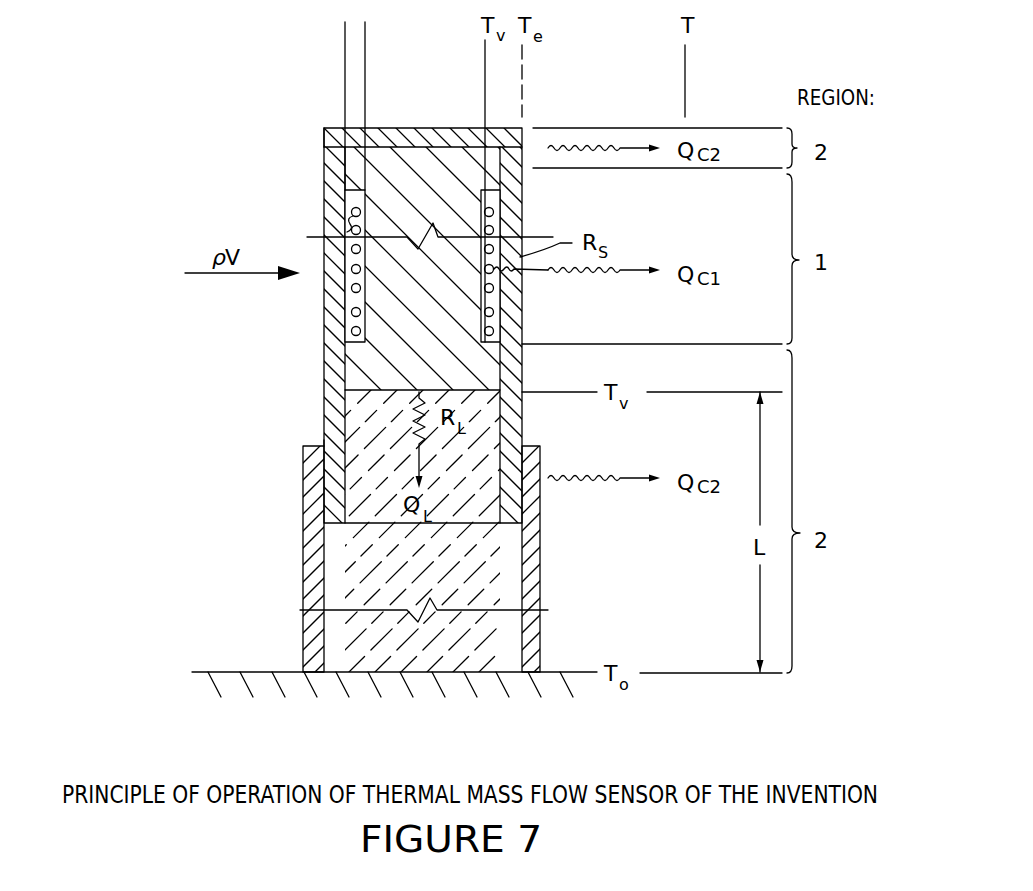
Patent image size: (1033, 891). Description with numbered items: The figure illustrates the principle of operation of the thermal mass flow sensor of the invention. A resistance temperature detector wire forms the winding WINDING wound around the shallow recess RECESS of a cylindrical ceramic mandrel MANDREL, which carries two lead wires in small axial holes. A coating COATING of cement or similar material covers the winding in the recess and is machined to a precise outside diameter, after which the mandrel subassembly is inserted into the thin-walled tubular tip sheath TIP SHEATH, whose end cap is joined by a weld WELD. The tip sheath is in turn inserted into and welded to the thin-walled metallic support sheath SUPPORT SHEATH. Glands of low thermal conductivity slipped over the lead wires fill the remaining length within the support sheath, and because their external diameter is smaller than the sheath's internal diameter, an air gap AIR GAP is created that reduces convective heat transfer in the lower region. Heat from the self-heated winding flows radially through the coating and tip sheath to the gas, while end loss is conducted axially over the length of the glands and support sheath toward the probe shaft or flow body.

The recess RECESS is at (392, 48).
The weld WELD is at (320, 140).
The tip sheath TIP SHEATH is at (320, 187).
The coating COATING is at (347, 225).
The RTD winding WINDING is at (347, 248).
The mandrel MANDREL is at (406, 288).
The support sheath SUPPORT SHEATH is at (302, 583).
The air gap AIR GAP is at (333, 648).